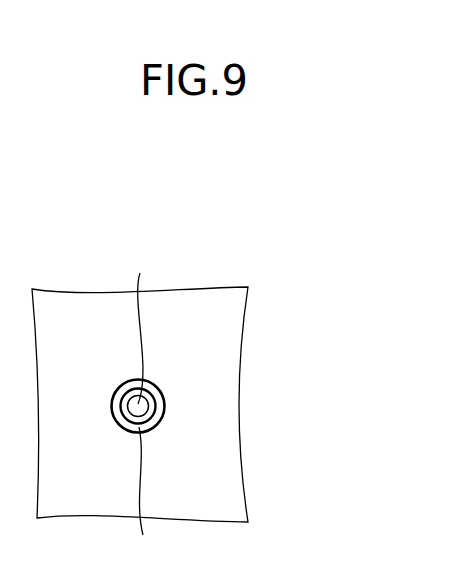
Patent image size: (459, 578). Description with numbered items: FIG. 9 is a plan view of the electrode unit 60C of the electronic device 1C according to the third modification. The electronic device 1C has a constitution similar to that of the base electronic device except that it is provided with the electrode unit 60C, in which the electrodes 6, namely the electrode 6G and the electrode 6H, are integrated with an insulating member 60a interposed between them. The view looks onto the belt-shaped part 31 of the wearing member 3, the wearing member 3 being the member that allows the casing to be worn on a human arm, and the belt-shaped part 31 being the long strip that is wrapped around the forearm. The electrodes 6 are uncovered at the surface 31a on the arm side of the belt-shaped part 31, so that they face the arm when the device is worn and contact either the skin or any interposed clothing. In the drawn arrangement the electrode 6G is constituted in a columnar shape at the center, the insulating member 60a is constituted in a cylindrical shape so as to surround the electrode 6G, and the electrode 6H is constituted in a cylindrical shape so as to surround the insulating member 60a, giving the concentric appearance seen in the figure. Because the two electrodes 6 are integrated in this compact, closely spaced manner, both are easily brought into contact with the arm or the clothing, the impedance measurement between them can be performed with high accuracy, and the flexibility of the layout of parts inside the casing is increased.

The electronic device 1C is at (207, 345).
The wearing member 3 is at (212, 502).
The electrodes 6 is at (146, 406).
The electrode 6G is at (144, 326).
The electrode 6H is at (148, 496).
The belt-shaped part 31 is at (140, 404).
The surface 31a is at (207, 412).
The electrode unit 60C is at (165, 398).
The insulating member 60a is at (150, 412).